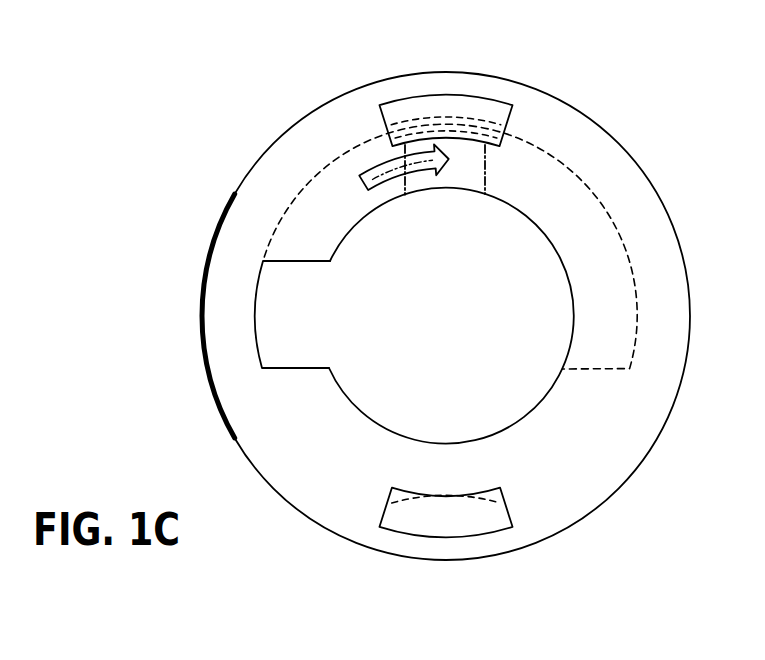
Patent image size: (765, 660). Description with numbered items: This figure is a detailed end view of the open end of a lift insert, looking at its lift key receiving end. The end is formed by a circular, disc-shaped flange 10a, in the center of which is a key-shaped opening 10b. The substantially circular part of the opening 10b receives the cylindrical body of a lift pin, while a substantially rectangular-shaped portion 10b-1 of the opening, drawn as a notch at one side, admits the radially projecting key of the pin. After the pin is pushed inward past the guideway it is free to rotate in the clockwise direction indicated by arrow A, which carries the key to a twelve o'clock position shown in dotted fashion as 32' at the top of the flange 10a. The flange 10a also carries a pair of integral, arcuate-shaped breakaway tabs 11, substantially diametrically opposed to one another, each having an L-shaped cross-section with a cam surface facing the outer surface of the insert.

The circular-shaped flange 10a is at (258, 188).
The key-shaped opening 10b is at (576, 315).
The rectangular-shaped portion of the key-shaped opening 10b-1 is at (255, 315).
The breakaway tabs 11 is at (400, 103).
The projecting portion shown in dotted fashion 32' is at (520, 133).
The arrow A is at (372, 172).